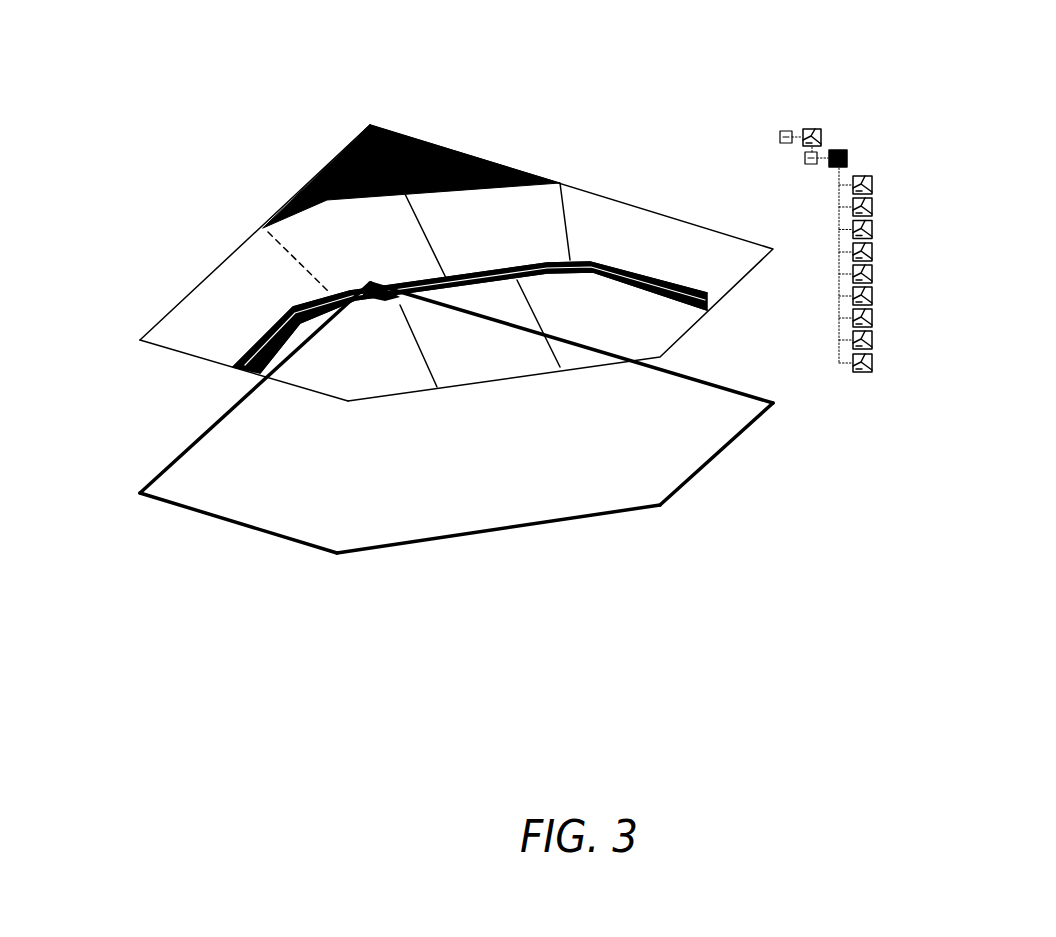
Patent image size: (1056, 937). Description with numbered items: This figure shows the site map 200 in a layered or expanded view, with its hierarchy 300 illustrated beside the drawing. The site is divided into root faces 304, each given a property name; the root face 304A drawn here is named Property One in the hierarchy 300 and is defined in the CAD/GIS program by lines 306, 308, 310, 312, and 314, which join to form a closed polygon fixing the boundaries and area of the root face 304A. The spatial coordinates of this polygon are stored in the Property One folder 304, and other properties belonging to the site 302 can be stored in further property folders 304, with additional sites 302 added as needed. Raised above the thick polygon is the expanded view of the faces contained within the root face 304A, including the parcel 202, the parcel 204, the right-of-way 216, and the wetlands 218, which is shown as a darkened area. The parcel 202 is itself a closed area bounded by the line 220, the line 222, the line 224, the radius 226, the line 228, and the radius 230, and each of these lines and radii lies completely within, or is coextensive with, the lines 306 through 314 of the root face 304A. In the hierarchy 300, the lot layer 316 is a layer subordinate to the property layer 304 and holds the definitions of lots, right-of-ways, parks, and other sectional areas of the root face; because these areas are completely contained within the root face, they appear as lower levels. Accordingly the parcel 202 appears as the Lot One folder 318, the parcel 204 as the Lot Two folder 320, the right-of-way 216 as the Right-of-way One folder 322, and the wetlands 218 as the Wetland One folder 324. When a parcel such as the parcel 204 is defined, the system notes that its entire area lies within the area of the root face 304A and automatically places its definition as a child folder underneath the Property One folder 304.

The site map 200 is at (352, 577).
The parcel 202 is at (243, 266).
The parcel 204 is at (317, 243).
The right-of-way 216 is at (693, 290).
The wetlands 218 is at (387, 155).
The line 220 is at (170, 350).
The line 222 is at (213, 270).
The line 224 is at (297, 267).
The radius 226 is at (327, 300).
The line 228 is at (273, 330).
The radius 230 is at (233, 367).
The hierarchy 300 is at (858, 407).
The site 302 is at (817, 120).
The root face / property folder 304 is at (933, 157).
The root face 304A is at (495, 430).
The line 306 is at (232, 520).
The line 308 is at (187, 450).
The line 310 is at (708, 383).
The line 312 is at (712, 460).
The line 314 is at (617, 513).
The lot layer 316 is at (477, 213).
The Lot 1 folder 318 is at (925, 184).
The Lot 2 folder 320 is at (925, 206).
The Right-of-way 1 folder 322 is at (988, 332).
The Wetland 1 folder 324 is at (960, 372).